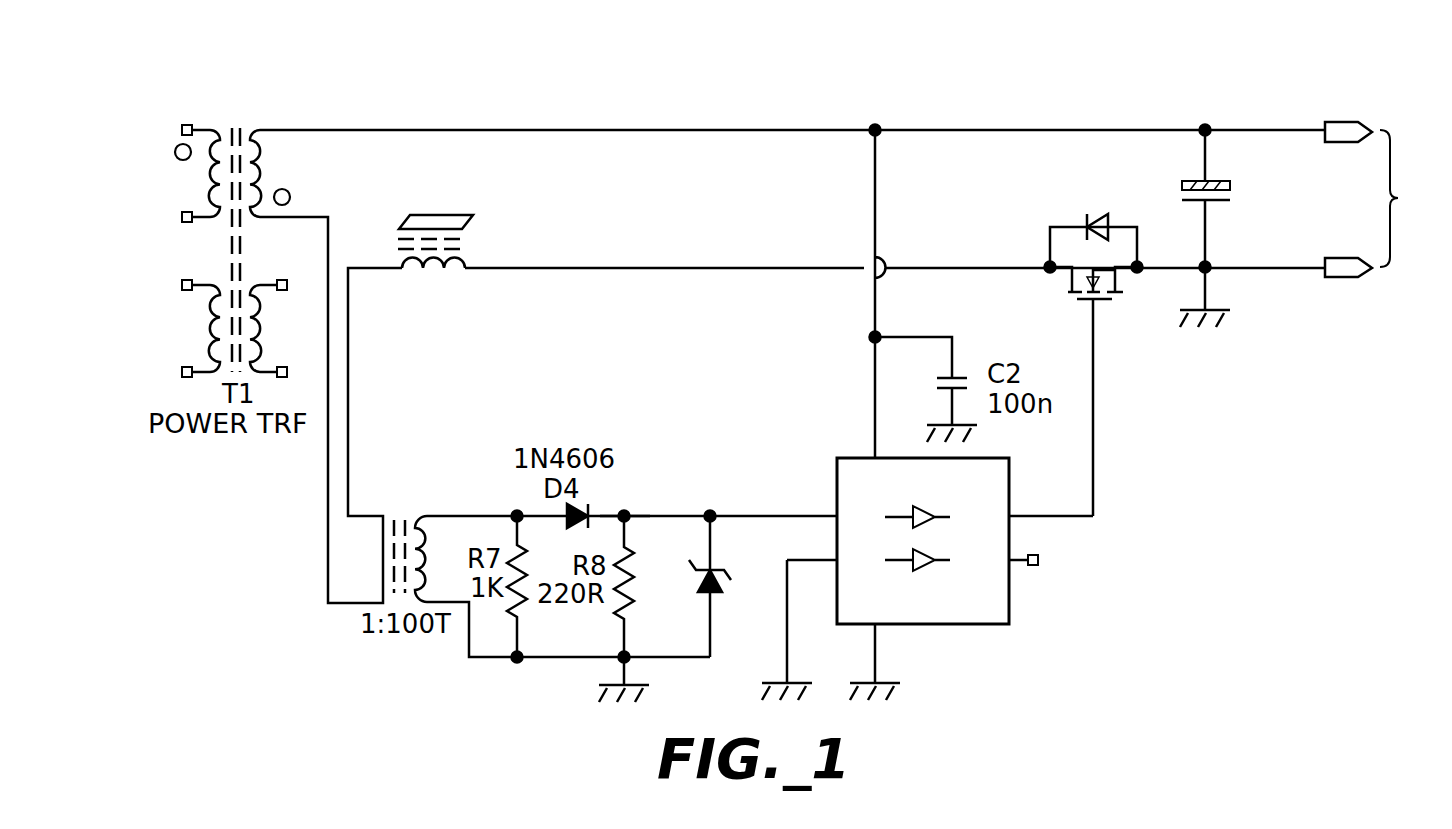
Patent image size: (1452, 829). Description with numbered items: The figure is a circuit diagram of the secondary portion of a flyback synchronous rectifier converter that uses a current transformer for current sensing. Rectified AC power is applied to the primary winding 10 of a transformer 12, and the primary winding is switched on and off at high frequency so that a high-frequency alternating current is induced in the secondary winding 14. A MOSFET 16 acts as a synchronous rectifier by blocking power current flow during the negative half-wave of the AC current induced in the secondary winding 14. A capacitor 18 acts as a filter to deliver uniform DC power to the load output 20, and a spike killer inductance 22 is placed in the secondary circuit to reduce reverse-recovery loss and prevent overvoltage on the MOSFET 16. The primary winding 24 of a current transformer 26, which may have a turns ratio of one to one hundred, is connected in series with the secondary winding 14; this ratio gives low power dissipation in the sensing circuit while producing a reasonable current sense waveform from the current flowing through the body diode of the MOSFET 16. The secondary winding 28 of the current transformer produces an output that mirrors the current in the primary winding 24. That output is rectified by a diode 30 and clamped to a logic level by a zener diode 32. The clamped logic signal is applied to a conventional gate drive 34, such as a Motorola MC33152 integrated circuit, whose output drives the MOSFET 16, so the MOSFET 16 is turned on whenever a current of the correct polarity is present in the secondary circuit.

The primary winding 10 is at (217, 187).
The transformer 12 is at (238, 131).
The secondary winding 14 is at (253, 187).
The MOSFET 16 is at (1070, 235).
The capacitor 18 is at (1193, 182).
The load output 20 is at (1380, 217).
The spike killer inductance 22 is at (470, 242).
The primary winding 24 is at (383, 555).
The current transformer 26 is at (402, 483).
The secondary winding 28 is at (418, 548).
The diode 30 is at (580, 503).
The zener diode 32 is at (690, 560).
The gate drive 34 is at (987, 592).